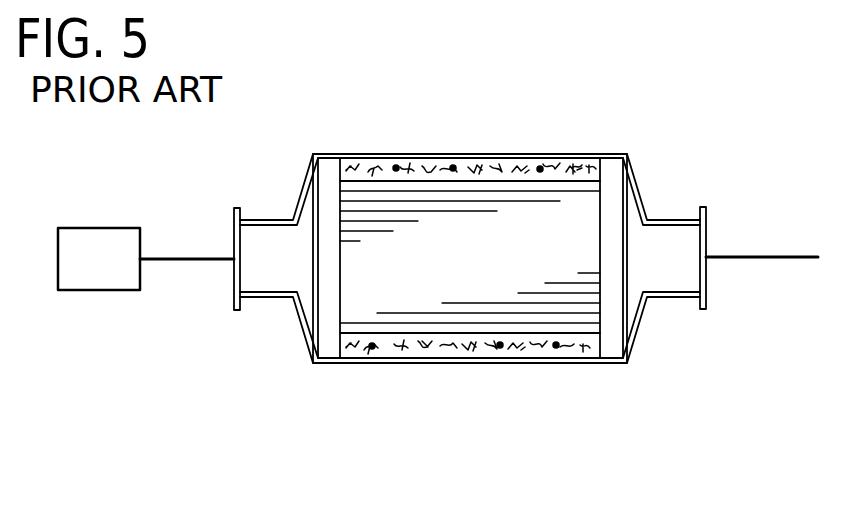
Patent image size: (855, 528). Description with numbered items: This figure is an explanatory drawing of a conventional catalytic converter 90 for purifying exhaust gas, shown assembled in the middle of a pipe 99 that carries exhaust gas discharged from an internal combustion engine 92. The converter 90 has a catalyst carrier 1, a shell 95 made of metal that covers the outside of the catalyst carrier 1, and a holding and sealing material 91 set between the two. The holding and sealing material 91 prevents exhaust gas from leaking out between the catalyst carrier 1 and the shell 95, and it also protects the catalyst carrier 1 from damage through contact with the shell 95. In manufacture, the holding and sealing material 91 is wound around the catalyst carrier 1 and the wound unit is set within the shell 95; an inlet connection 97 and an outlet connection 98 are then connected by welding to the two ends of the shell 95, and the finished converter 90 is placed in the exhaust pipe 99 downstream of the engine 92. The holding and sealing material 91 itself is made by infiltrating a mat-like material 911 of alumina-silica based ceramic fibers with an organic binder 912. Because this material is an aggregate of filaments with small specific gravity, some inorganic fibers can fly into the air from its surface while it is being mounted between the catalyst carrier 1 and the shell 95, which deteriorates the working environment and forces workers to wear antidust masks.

The catalyst carrier 1 is at (484, 267).
The catalytic converter 90 is at (470, 282).
The holding and sealing material 91 is at (436, 157).
The mat-like material 911 is at (578, 170).
The organic binder 912 is at (500, 348).
The internal combustion engine 92 is at (98, 291).
The shell 95 is at (441, 364).
The inlet connection 97 is at (262, 298).
The outlet connection 98 is at (683, 303).
The pipe 99 is at (176, 262).